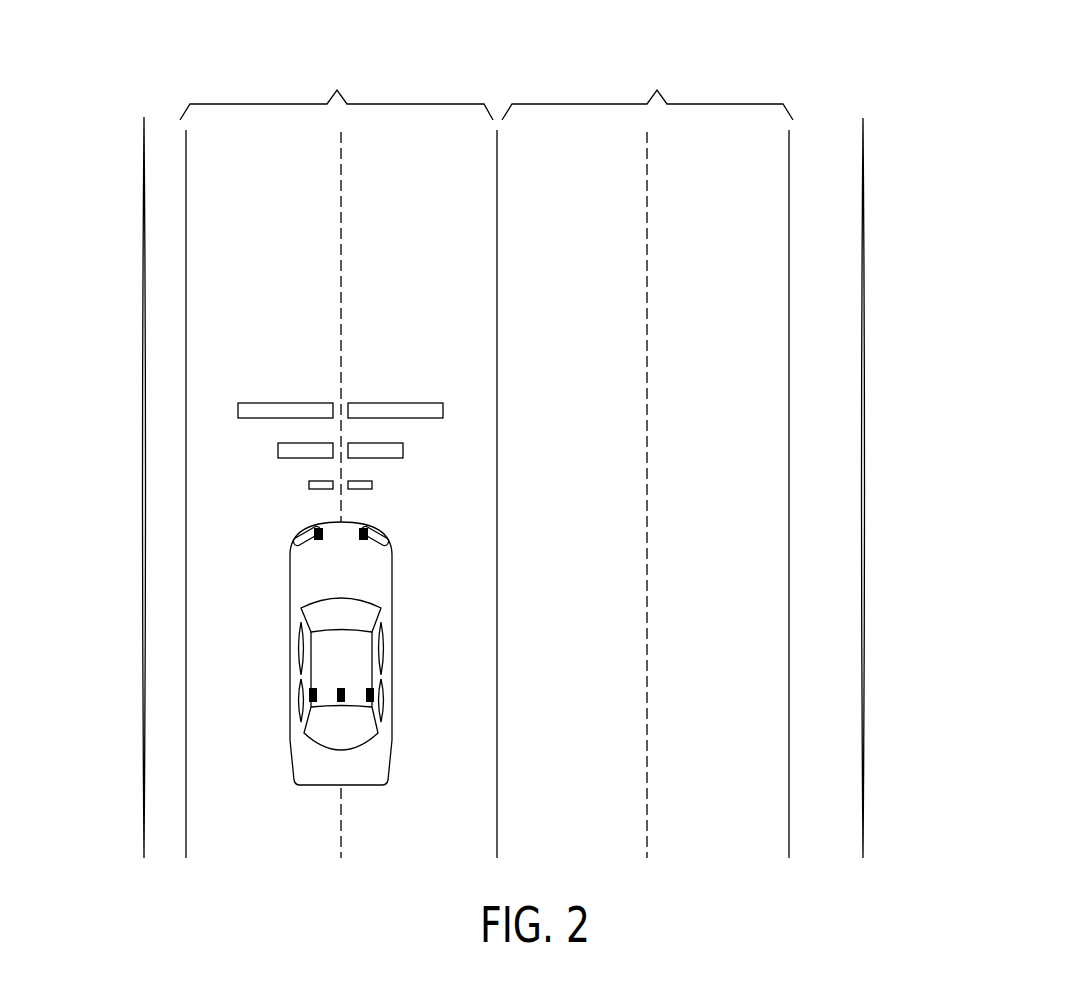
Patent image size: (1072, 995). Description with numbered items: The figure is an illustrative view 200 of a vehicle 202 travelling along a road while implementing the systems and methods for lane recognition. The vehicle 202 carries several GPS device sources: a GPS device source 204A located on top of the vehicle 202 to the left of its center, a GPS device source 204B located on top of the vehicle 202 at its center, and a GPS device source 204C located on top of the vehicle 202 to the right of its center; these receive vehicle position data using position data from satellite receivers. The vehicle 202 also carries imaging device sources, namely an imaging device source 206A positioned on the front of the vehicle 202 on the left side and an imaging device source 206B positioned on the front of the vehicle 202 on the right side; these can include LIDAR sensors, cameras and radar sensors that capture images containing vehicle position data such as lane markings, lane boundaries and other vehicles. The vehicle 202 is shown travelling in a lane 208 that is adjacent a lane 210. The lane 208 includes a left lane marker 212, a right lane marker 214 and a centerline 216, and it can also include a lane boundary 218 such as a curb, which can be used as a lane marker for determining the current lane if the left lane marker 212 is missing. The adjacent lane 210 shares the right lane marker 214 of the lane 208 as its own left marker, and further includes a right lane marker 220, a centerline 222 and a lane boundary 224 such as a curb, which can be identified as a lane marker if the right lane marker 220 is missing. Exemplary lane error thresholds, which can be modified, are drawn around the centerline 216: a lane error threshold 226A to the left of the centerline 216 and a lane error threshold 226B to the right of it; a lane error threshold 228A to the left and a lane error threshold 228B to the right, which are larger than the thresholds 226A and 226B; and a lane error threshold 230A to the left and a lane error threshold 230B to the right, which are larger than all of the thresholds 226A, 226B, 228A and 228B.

The illustrative view 200 is at (930, 99).
The vehicle 202 is at (337, 653).
The GPS device source 204A is at (309, 693).
The GPS device source 204B is at (341, 687).
The GPS device source 204C is at (374, 693).
The imaging device source 206A is at (320, 545).
The imaging device source 206B is at (362, 545).
The lane 208 is at (336, 89).
The lane 210 is at (647, 89).
The left lane marker 212 is at (186, 155).
The right lane marker 214 is at (497, 155).
The centerline 216 is at (341, 155).
The lane boundary 218 is at (142, 155).
The right lane marker 220 is at (789, 155).
The centerline 222 is at (647, 155).
The lane boundary 224 is at (865, 155).
The lane error threshold 226A is at (303, 490).
The lane error threshold 226B is at (379, 490).
The lane error threshold 228A is at (295, 460).
The lane error threshold 228B is at (387, 460).
The lane error threshold 230A is at (283, 401).
The lane error threshold 230B is at (398, 401).